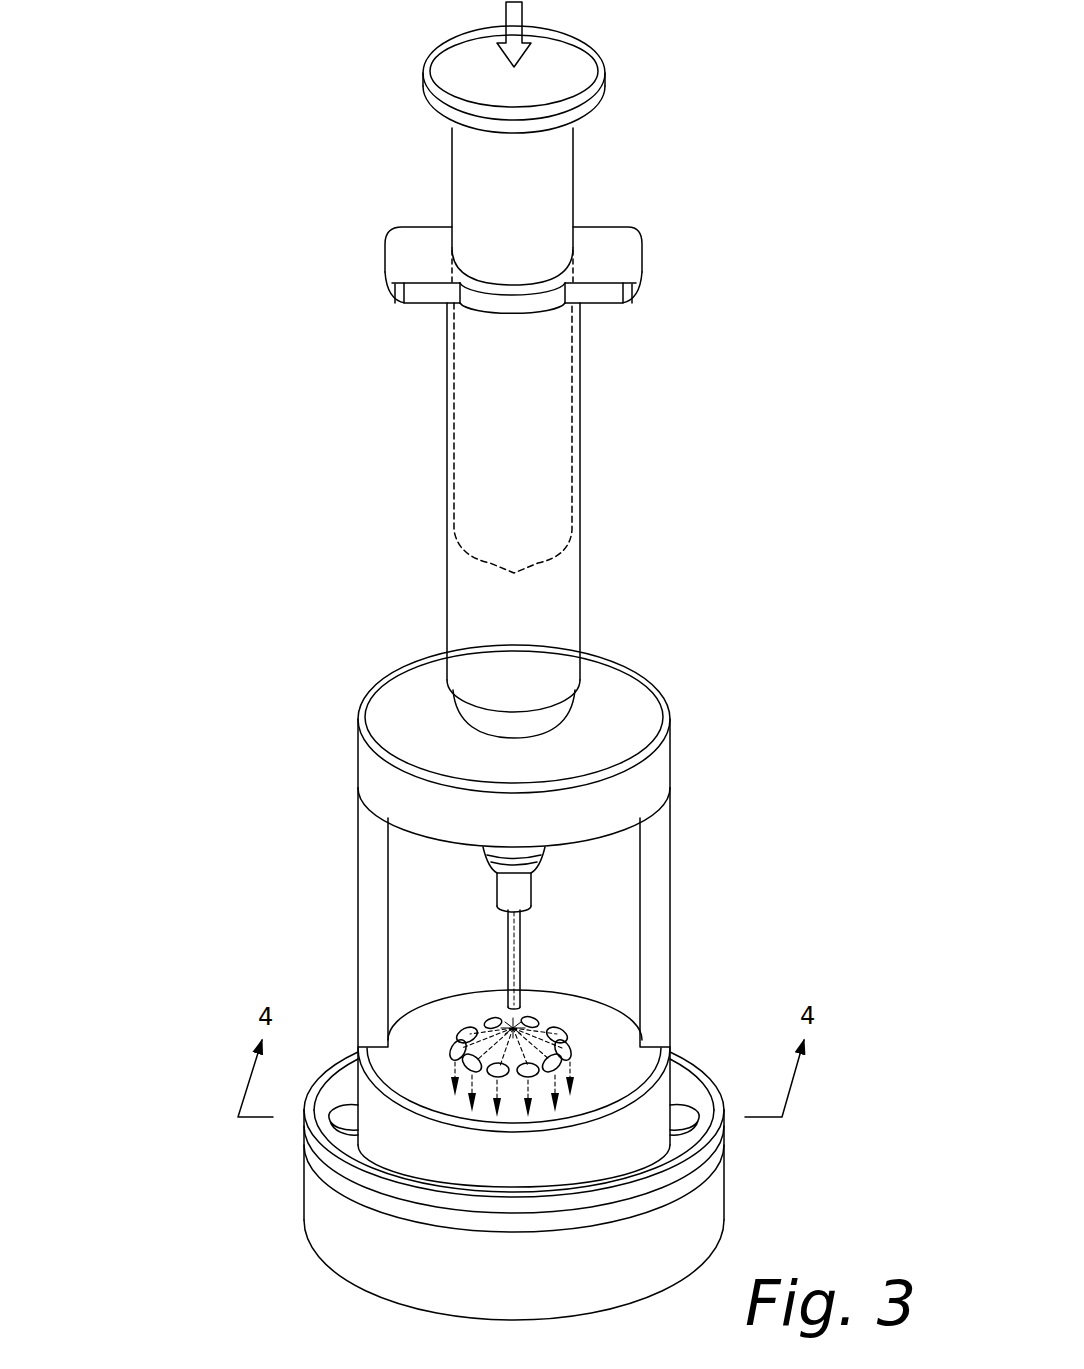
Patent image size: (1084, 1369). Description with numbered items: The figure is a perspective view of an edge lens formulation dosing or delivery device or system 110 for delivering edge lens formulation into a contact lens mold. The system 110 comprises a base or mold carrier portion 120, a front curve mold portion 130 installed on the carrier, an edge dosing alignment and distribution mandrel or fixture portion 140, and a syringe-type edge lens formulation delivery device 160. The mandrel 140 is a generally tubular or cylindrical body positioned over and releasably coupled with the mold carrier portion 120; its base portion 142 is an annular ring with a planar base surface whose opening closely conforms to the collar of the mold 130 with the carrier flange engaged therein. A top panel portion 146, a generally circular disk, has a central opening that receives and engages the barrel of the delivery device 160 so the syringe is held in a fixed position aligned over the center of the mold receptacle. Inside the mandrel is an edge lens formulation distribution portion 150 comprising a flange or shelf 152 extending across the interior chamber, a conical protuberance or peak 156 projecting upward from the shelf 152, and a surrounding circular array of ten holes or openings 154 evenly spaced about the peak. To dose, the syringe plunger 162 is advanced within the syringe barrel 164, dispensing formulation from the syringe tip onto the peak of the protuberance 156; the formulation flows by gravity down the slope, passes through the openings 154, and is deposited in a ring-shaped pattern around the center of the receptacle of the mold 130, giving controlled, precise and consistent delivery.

The edge lens formulation dosing or delivery device or system 110 is at (218, 500).
The base or mold carrier portion 120 is at (262, 1231).
The mold portion 130 is at (680, 1120).
The edge dosing alignment and distribution mandrel or fixture portion 140 is at (300, 881).
The base portion 142 is at (514, 1157).
The top panel portion 146 is at (617, 697).
The edge lens formulation distribution portion 150 is at (538, 1002).
The flange or shelf 152 is at (448, 1018).
The holes or openings 154 is at (577, 1047).
The conical protuberance or peak 156 is at (512, 1027).
The edge lens formulation delivery device 160 is at (650, 422).
The syringe plunger 162 is at (500, 178).
The syringe barrel 164 is at (493, 610).